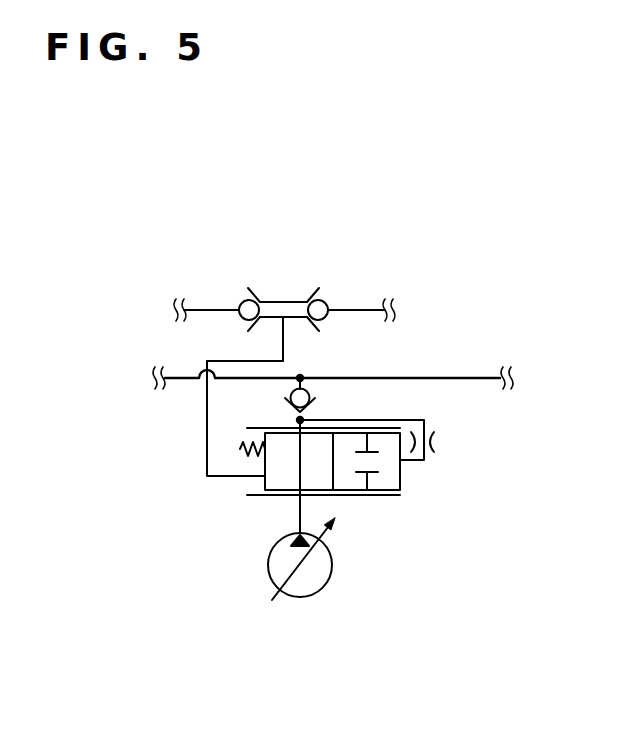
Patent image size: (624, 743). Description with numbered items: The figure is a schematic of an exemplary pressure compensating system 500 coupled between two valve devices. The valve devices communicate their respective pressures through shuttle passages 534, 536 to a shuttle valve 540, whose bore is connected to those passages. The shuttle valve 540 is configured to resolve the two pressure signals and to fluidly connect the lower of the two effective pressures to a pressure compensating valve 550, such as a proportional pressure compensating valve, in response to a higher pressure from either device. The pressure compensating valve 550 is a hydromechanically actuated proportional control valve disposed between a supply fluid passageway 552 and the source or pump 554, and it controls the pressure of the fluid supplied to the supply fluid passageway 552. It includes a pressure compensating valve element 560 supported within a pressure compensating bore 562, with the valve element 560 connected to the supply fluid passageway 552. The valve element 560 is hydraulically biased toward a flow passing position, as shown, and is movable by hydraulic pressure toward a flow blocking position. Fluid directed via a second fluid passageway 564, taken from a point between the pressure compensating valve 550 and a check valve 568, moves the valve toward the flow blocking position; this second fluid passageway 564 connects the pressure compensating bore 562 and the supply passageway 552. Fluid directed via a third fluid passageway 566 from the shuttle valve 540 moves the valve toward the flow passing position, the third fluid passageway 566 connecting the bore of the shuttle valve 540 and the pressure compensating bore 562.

The pressure compensating system 500 is at (472, 315).
The shuttle passage 534 is at (215, 308).
The shuttle passage 536 is at (350, 308).
The shuttle valve 540 is at (282, 301).
The pressure compensating valve 550 is at (336, 472).
The supply fluid passageway 552 is at (438, 378).
The pump 554 is at (333, 565).
The pressure compensating valve element 560 is at (395, 492).
The pressure compensating bore 562 is at (255, 488).
The second fluid passageway 564 is at (423, 411).
The third fluid passageway 566 is at (205, 430).
The check valve 568 is at (315, 407).